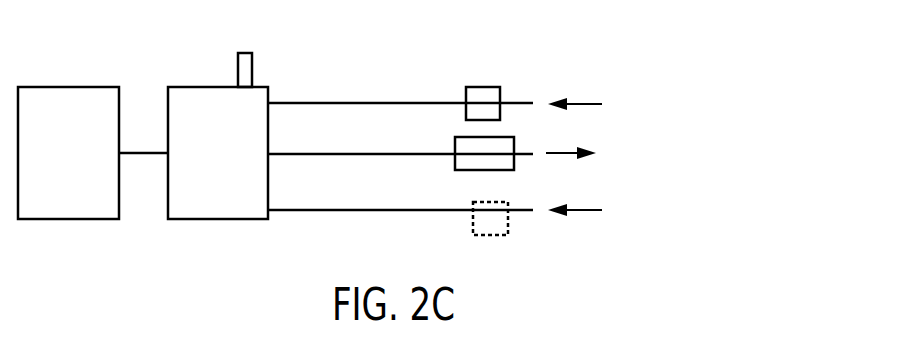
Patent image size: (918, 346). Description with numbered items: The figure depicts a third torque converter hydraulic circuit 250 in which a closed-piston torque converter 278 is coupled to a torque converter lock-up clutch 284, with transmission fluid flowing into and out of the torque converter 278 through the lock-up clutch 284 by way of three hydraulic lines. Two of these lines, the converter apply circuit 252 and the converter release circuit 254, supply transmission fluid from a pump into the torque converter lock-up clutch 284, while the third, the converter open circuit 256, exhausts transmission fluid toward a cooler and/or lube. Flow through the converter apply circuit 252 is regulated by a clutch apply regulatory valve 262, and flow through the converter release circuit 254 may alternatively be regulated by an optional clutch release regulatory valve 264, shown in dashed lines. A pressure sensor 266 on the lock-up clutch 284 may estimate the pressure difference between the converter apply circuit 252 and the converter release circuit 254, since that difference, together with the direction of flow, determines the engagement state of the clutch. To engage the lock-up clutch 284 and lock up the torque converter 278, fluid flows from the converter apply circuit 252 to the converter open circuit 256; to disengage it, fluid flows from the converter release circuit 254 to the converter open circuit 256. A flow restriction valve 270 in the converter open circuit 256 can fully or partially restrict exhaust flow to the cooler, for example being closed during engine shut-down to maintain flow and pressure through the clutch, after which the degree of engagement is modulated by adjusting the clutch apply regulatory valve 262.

The third torque converter hydraulic circuit 250 is at (672, 31).
The converter apply circuit 252 is at (398, 103).
The converter release circuit 254 is at (398, 210).
The converter open circuit 256 is at (398, 154).
The clutch apply regulatory valve 262 is at (478, 87).
The clutch release regulatory valve 264 is at (490, 235).
The pressure sensor 266 is at (248, 52).
The flow restriction valve 270 is at (487, 170).
The closed-piston torque converter 278 is at (68, 153).
The torque converter lock-up clutch 284 is at (218, 153).